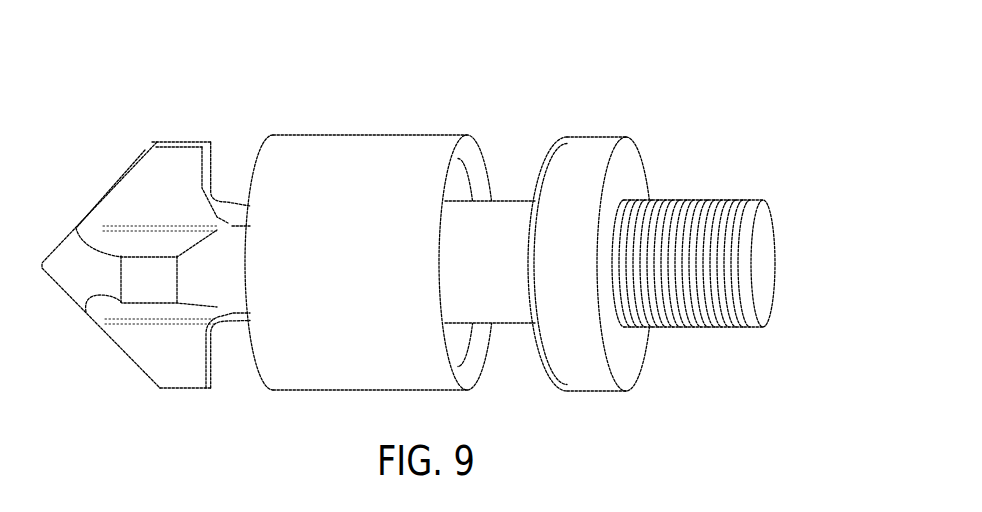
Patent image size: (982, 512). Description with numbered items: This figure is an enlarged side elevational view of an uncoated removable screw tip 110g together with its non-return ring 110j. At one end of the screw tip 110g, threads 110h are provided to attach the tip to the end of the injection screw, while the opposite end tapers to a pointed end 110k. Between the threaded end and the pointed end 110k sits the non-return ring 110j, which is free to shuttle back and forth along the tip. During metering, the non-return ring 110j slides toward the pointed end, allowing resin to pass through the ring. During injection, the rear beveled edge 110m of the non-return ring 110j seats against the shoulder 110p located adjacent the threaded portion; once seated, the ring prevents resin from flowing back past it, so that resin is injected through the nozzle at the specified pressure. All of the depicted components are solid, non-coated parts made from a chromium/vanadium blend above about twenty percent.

The removable screw tip 110g is at (427, 206).
The pointed end 110k is at (127, 197).
The non-return ring 110j is at (352, 148).
The rear beveled edge 110m is at (485, 152).
The shoulder 110p is at (546, 152).
The threads 110h is at (681, 222).